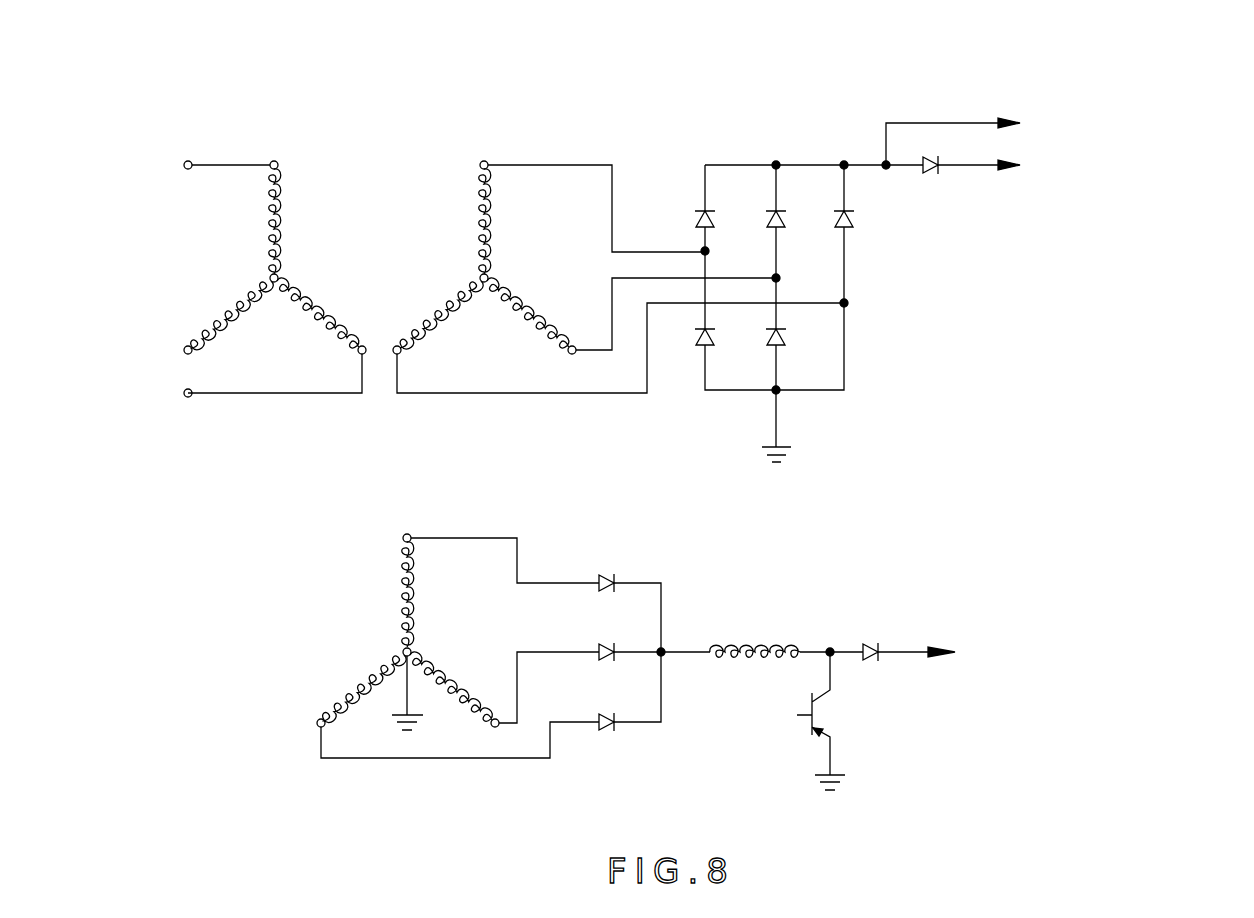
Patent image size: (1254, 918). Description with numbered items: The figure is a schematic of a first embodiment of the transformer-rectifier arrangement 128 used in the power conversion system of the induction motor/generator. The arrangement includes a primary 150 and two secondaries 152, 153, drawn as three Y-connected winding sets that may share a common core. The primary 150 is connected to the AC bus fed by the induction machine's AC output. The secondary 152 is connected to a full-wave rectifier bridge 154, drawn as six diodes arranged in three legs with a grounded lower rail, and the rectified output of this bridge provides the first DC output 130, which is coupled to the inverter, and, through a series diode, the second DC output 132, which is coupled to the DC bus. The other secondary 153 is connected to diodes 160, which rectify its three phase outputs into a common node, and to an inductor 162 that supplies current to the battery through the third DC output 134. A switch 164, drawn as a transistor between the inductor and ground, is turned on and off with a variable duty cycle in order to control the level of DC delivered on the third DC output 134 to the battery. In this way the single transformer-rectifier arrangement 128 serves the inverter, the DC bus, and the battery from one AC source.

The transformer-rectifier arrangement 128 is at (767, 100).
The first DC output 130 is at (930, 122).
The second DC output 132 is at (960, 167).
The third DC output 134 is at (900, 652).
The primary 150 is at (340, 228).
The secondary 152 is at (544, 194).
The secondary 153 is at (355, 640).
The full-wave rectifier bridge 154 is at (898, 300).
The diodes 160 is at (642, 543).
The inductor 162 is at (740, 640).
The switch 164 is at (862, 720).